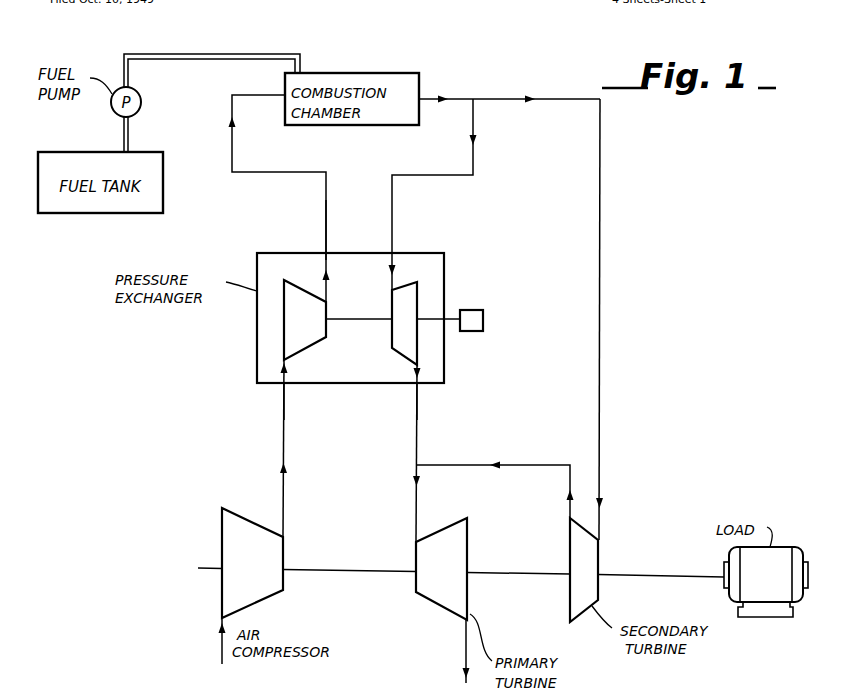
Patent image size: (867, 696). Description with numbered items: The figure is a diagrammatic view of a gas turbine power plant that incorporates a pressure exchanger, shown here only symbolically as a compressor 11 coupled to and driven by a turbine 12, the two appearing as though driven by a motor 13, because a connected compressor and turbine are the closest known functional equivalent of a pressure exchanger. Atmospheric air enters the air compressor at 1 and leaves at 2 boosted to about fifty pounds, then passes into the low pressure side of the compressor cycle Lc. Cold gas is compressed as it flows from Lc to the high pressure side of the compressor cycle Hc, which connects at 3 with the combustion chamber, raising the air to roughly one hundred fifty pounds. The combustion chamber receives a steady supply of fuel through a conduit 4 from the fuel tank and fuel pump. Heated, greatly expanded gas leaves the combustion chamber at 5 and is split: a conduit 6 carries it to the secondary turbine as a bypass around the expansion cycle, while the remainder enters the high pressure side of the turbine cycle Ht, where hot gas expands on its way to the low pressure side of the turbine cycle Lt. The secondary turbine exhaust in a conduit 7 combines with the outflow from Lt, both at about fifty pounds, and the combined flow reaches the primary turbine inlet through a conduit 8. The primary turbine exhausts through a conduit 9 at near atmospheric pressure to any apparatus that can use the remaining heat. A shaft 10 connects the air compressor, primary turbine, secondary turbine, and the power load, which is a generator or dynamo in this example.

The air inlet 1 is at (220, 646).
The air compressor outlet 2 is at (284, 510).
The connection to combustion chamber 3 is at (243, 97).
The fuel conduit 4 is at (130, 73).
The combustion chamber outlet 5 is at (457, 98).
The conduit 6 is at (601, 222).
The conduit 7 is at (527, 464).
The conduit 8 is at (412, 507).
The conduit 9 is at (463, 638).
The shaft 10 is at (496, 571).
The compressor 11 is at (306, 347).
The turbine 12 is at (392, 352).
The motor 13 is at (484, 317).
The high pressure side of the compressor cycle Hc is at (325, 235).
The high pressure side of the turbine cycle Ht is at (393, 240).
The low pressure side of the compressor cycle Lc is at (282, 396).
The low pressure side of the turbine cycle Lt is at (418, 400).